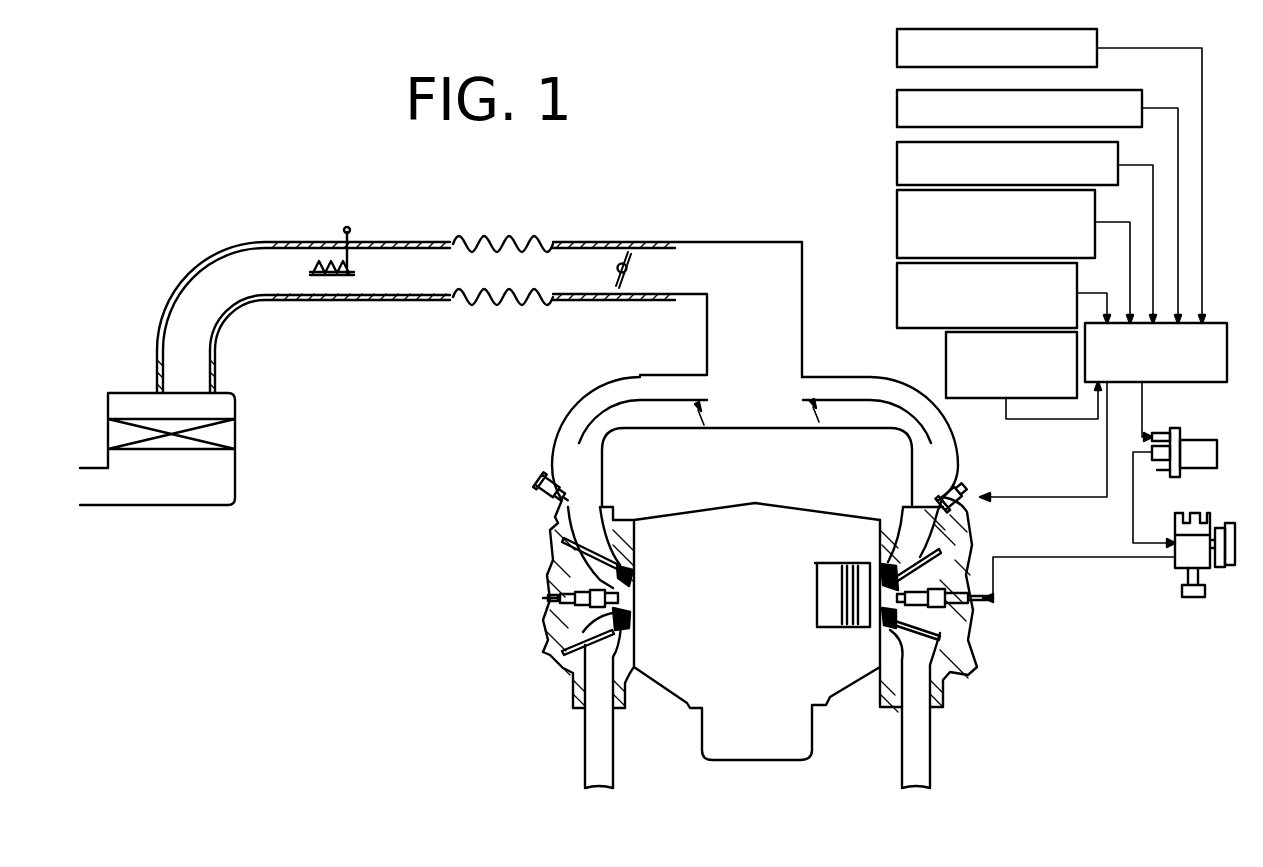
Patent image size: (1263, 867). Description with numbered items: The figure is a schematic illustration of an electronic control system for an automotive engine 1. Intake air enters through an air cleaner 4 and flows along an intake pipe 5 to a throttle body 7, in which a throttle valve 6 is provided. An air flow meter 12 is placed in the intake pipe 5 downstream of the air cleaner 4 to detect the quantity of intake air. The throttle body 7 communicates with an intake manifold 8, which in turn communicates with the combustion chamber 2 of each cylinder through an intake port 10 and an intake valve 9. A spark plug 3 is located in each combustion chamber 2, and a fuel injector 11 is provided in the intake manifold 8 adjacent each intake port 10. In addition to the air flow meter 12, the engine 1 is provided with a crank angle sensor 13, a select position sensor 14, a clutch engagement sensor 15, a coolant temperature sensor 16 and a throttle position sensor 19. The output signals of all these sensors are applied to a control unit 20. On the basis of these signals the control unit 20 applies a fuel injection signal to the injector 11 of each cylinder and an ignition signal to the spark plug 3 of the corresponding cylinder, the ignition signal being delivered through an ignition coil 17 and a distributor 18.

The engine 1 is at (760, 621).
The combustion chamber 2 is at (866, 640).
The spark plug 3 is at (1036, 600).
The air cleaner 4 is at (233, 437).
The intake pipe 5 is at (428, 301).
The throttle valve 6 is at (621, 252).
The throttle body 7 is at (606, 301).
The intake manifold 8 is at (890, 386).
The intake valve 9 is at (853, 548).
The intake port 10 is at (906, 516).
The fuel injector 11 is at (968, 486).
The air flow meter 12 is at (897, 48).
The crank angle sensor 13 is at (897, 108).
The select position sensor 14 is at (897, 165).
The clutch engagement sensor 15 is at (897, 213).
The coolant temperature sensor 16 is at (897, 287).
The ignition coil 17 is at (1217, 456).
The distributor 18 is at (1202, 565).
The throttle position sensor 19 is at (946, 368).
The control unit 20 is at (1175, 383).